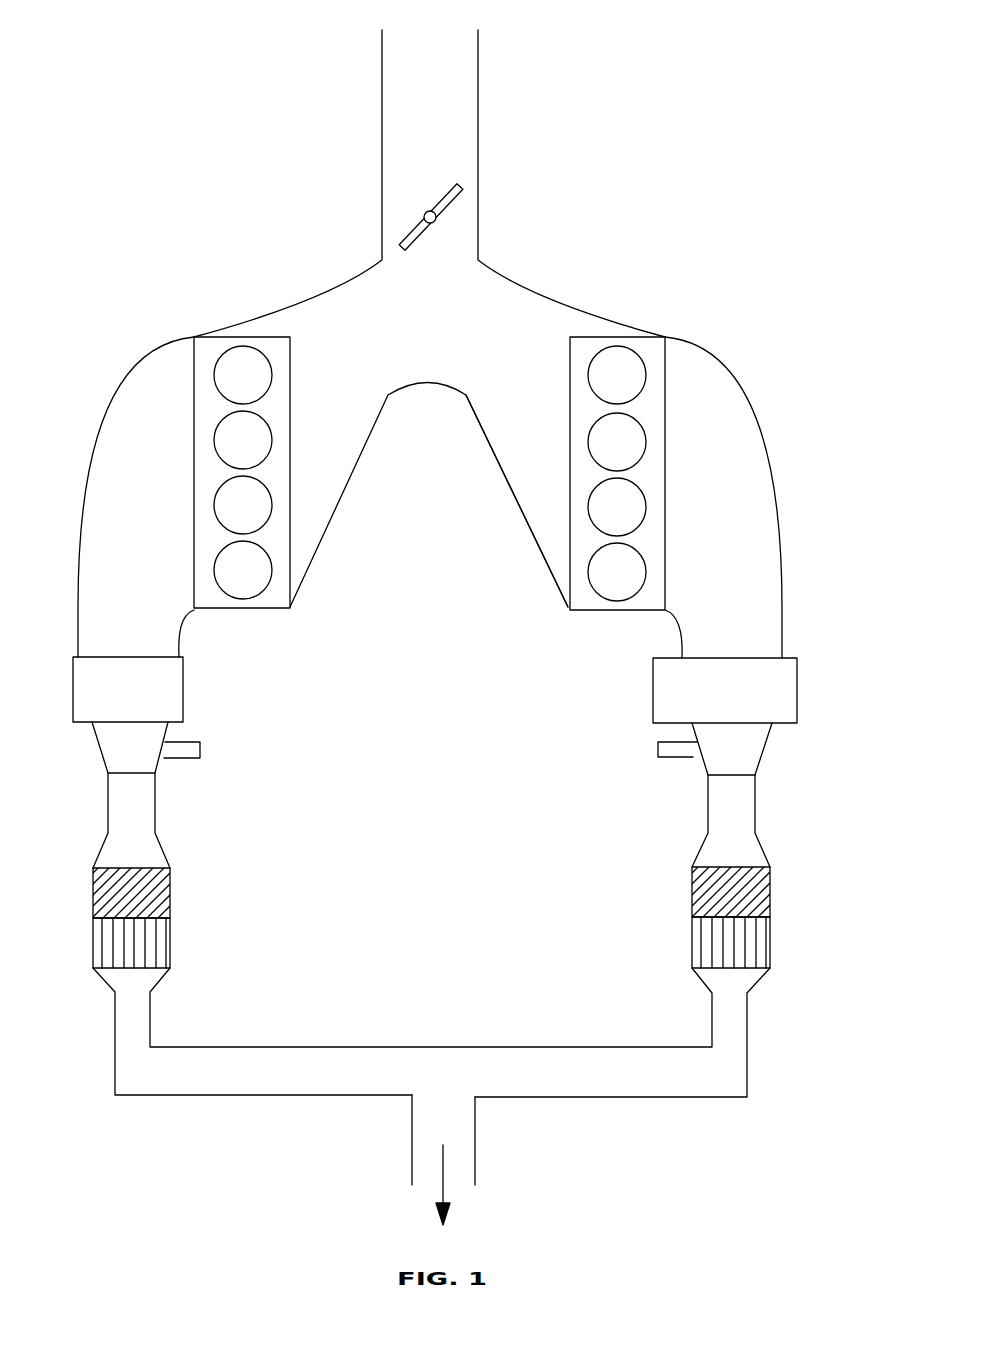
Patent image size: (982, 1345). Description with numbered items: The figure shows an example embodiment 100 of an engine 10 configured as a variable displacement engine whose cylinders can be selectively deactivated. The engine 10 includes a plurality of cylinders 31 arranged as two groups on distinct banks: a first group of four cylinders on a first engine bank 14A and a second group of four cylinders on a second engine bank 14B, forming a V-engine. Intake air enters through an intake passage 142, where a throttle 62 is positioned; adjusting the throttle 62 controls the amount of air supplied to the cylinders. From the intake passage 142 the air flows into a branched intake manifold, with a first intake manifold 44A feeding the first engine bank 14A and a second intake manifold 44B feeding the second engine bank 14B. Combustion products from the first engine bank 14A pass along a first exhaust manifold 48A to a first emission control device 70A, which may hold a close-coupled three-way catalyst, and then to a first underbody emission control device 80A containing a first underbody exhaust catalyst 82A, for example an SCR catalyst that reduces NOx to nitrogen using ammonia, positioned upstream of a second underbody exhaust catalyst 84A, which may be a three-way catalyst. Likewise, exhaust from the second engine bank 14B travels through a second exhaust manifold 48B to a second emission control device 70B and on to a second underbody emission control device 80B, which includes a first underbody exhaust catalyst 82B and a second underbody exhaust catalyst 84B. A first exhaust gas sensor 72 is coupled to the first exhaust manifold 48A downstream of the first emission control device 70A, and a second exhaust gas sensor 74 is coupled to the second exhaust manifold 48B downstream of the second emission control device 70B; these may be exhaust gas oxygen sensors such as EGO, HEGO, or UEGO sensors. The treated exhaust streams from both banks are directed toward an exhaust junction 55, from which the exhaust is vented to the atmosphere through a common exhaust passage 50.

The example embodiment 100 is at (718, 63).
The engine 10 is at (188, 192).
The intake passage 142 is at (441, 77).
The throttle 62 is at (412, 228).
The second engine bank 14B is at (240, 337).
The first engine bank 14A is at (612, 337).
The cylinders 31 is at (246, 588).
The second intake manifold 44B is at (345, 373).
The first intake manifold 44A is at (551, 373).
The second exhaust manifold 48B is at (148, 649).
The first exhaust manifold 48A is at (748, 651).
The second emission control device 70B is at (149, 701).
The first emission control device 70A is at (745, 701).
The second exhaust gas sensor 74 is at (190, 742).
The first exhaust gas sensor 72 is at (658, 744).
The second underbody emission control device 80B is at (167, 857).
The first underbody emission control device 80A is at (700, 855).
The first underbody exhaust catalyst 82B is at (163, 895).
The first underbody exhaust catalyst 82A is at (700, 900).
The second underbody exhaust catalyst 84B is at (163, 950).
The second underbody exhaust catalyst 84A is at (700, 950).
The exhaust junction 55 is at (443, 1085).
The common exhaust passage 50 is at (411, 1172).